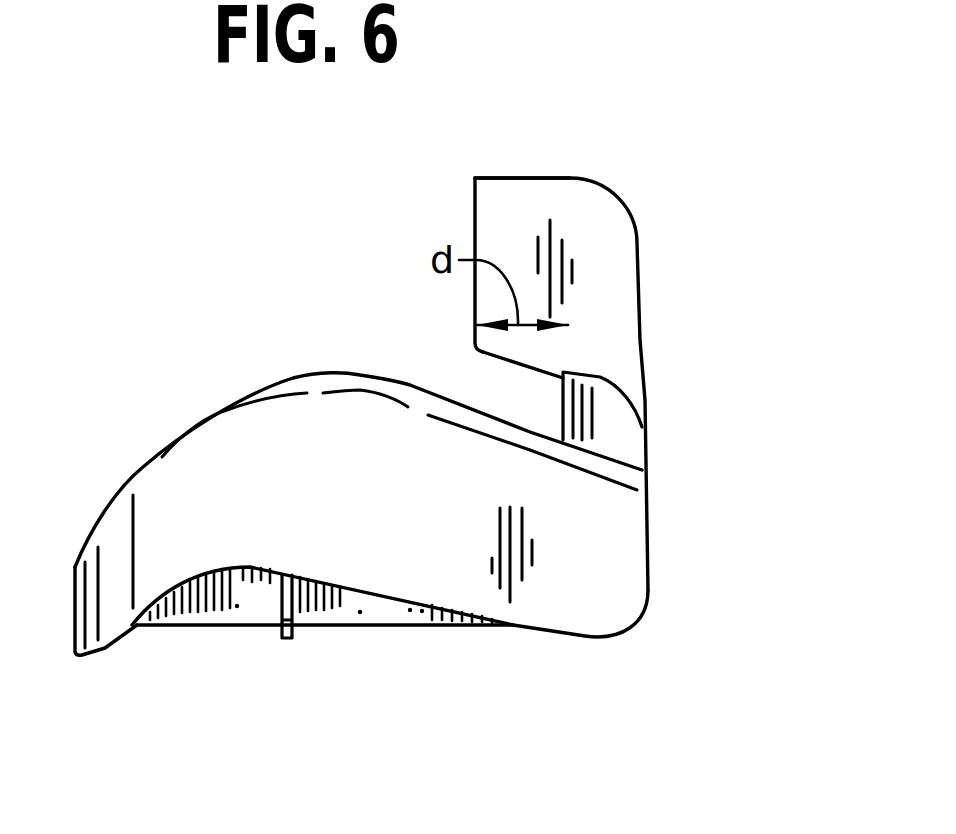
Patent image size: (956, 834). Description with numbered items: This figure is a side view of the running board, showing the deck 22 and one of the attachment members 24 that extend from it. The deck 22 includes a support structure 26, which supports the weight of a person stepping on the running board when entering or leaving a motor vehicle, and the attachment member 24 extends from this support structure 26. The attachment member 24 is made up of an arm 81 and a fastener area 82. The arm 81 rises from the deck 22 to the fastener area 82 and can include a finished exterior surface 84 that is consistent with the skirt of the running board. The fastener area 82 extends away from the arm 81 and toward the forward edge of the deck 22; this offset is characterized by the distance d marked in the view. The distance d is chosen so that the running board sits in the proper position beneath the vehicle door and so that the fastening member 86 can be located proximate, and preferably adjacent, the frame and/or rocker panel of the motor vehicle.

The deck 22 is at (457, 577).
The attachment member 24 is at (620, 258).
The support structure 26 is at (358, 571).
The arm 81 is at (613, 422).
The fastener area 82 is at (617, 297).
The finished exterior surface 84 is at (563, 417).
The fastening member 86 is at (475, 227).